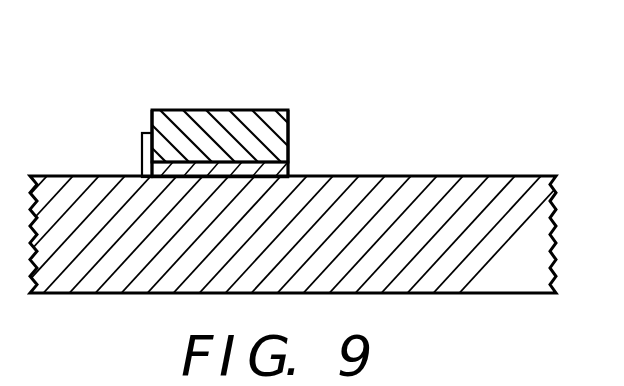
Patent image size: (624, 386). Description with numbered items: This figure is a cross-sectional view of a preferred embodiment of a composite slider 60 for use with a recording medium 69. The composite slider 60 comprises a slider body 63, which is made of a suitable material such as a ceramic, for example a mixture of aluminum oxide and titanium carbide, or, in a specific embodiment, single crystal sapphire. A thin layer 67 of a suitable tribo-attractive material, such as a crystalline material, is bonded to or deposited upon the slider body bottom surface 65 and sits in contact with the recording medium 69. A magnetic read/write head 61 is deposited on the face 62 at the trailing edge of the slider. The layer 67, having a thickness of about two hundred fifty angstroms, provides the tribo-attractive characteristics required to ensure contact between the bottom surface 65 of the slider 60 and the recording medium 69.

The composite slider 60 is at (230, 70).
The magnetic read/write head 61 is at (142, 143).
The face 62 is at (152, 130).
The slider body 63 is at (247, 124).
The slider body bottom surface 65 is at (277, 150).
The thin layer 67 is at (290, 168).
The recording medium 69 is at (540, 210).